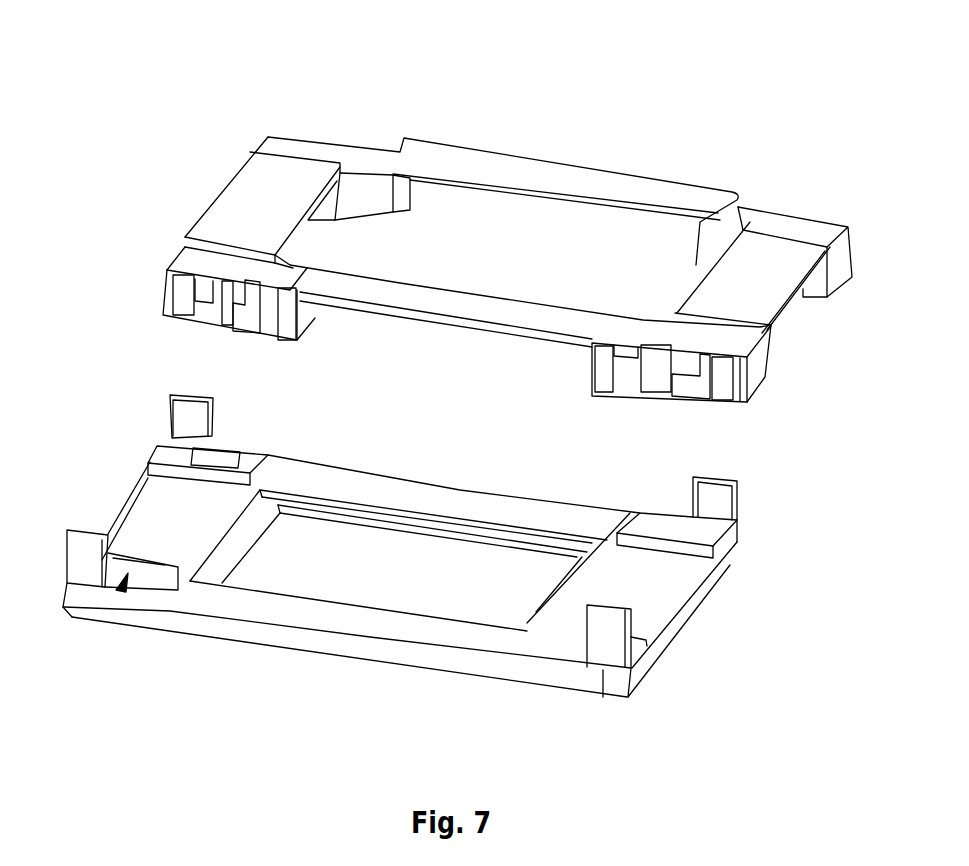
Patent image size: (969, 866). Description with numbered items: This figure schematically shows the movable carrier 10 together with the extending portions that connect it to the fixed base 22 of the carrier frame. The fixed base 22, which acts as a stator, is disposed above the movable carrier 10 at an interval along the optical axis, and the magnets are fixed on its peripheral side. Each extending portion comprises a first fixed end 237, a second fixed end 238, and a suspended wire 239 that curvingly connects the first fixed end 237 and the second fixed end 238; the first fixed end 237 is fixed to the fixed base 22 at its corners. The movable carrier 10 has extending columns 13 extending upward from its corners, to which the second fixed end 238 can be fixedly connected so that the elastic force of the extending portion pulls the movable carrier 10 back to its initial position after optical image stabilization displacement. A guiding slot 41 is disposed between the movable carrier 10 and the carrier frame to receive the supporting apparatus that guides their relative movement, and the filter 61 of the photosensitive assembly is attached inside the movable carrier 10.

The fixed base 22 is at (446, 217).
The second fixed end 238 is at (167, 267).
The first fixed end 237 is at (253, 330).
The suspended wire 239 is at (237, 337).
The movable carrier 10 is at (377, 564).
The extending column 13 is at (170, 400).
The guiding slot 41 is at (104, 618).
The filter 61 is at (440, 575).